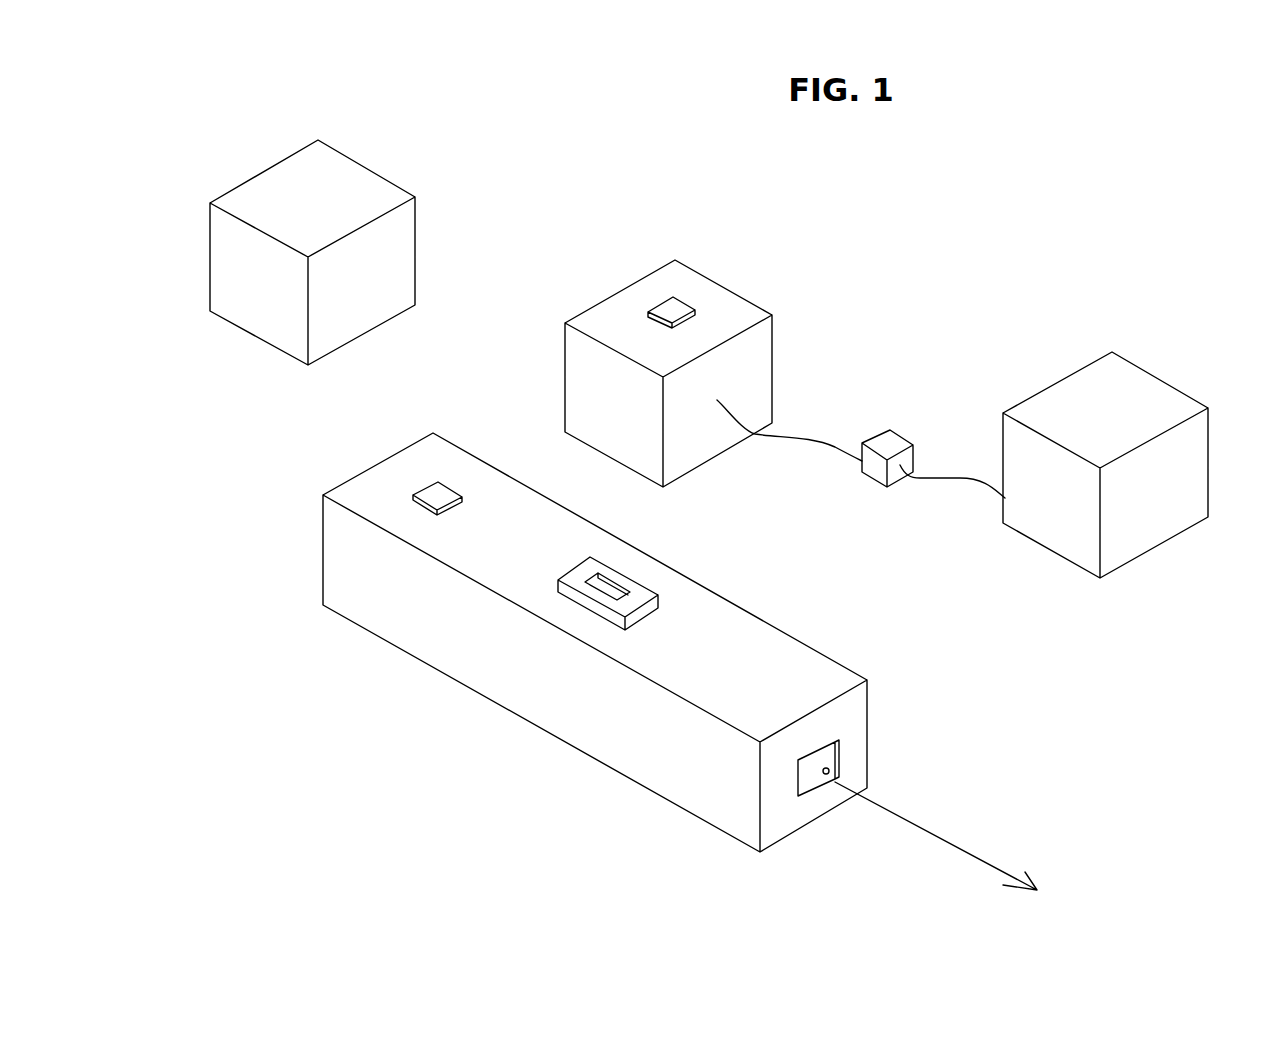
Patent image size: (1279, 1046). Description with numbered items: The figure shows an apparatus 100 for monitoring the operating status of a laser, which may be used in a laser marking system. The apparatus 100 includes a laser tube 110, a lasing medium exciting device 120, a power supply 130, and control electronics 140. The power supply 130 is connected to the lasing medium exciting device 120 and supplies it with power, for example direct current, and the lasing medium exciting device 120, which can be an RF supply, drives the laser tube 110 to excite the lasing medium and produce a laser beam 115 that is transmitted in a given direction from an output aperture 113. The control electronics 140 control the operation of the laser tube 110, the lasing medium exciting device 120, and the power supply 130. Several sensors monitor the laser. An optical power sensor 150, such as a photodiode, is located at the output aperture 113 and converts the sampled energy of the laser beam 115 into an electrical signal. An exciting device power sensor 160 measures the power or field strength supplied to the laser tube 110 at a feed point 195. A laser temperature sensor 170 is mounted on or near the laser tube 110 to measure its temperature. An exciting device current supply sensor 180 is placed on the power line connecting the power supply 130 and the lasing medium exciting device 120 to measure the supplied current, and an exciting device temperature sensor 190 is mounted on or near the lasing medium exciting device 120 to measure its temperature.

The apparatus 100 is at (1078, 127).
The laser tube 110 is at (538, 728).
The output aperture 113 is at (840, 767).
The laser beam 115 is at (893, 812).
The lasing medium exciting device 120 is at (725, 288).
The power supply 130 is at (1162, 377).
The control electronics 140 is at (367, 168).
The optical power sensor 150 is at (840, 762).
The exciting device power sensor 160 is at (618, 575).
The laser temperature sensor 170 is at (417, 503).
The exciting device current supply sensor 180 is at (903, 433).
The exciting device temperature sensor 190 is at (658, 303).
The feed point 195 is at (705, 596).